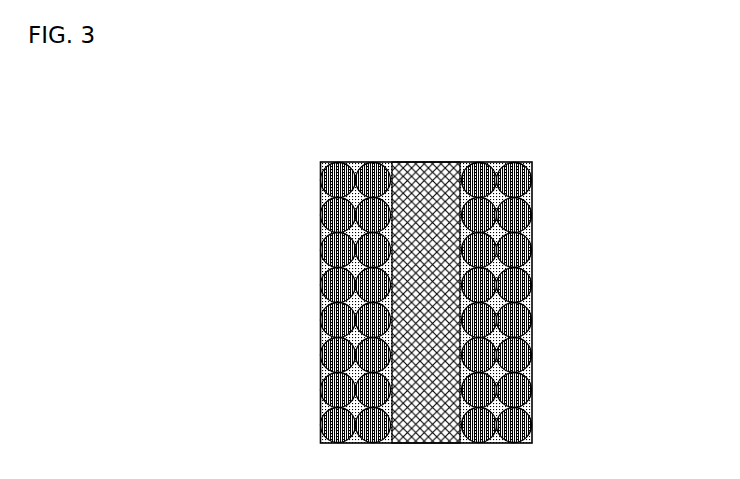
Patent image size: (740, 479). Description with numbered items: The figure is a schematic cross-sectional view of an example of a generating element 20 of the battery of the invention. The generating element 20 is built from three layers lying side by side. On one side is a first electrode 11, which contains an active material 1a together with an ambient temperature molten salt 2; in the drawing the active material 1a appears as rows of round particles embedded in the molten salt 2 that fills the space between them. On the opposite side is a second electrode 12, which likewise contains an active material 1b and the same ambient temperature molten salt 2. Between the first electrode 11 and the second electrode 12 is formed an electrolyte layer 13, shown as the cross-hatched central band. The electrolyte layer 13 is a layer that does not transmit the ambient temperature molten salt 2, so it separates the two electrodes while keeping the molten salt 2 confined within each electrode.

The generating element 20 is at (540, 72).
The first electrode 11 is at (356, 257).
The second electrode 12 is at (497, 257).
The electrolyte layer 13 is at (423, 162).
The active material 1a is at (375, 162).
The active material 1b is at (516, 162).
The ambient temperature molten salt 2 is at (353, 162).